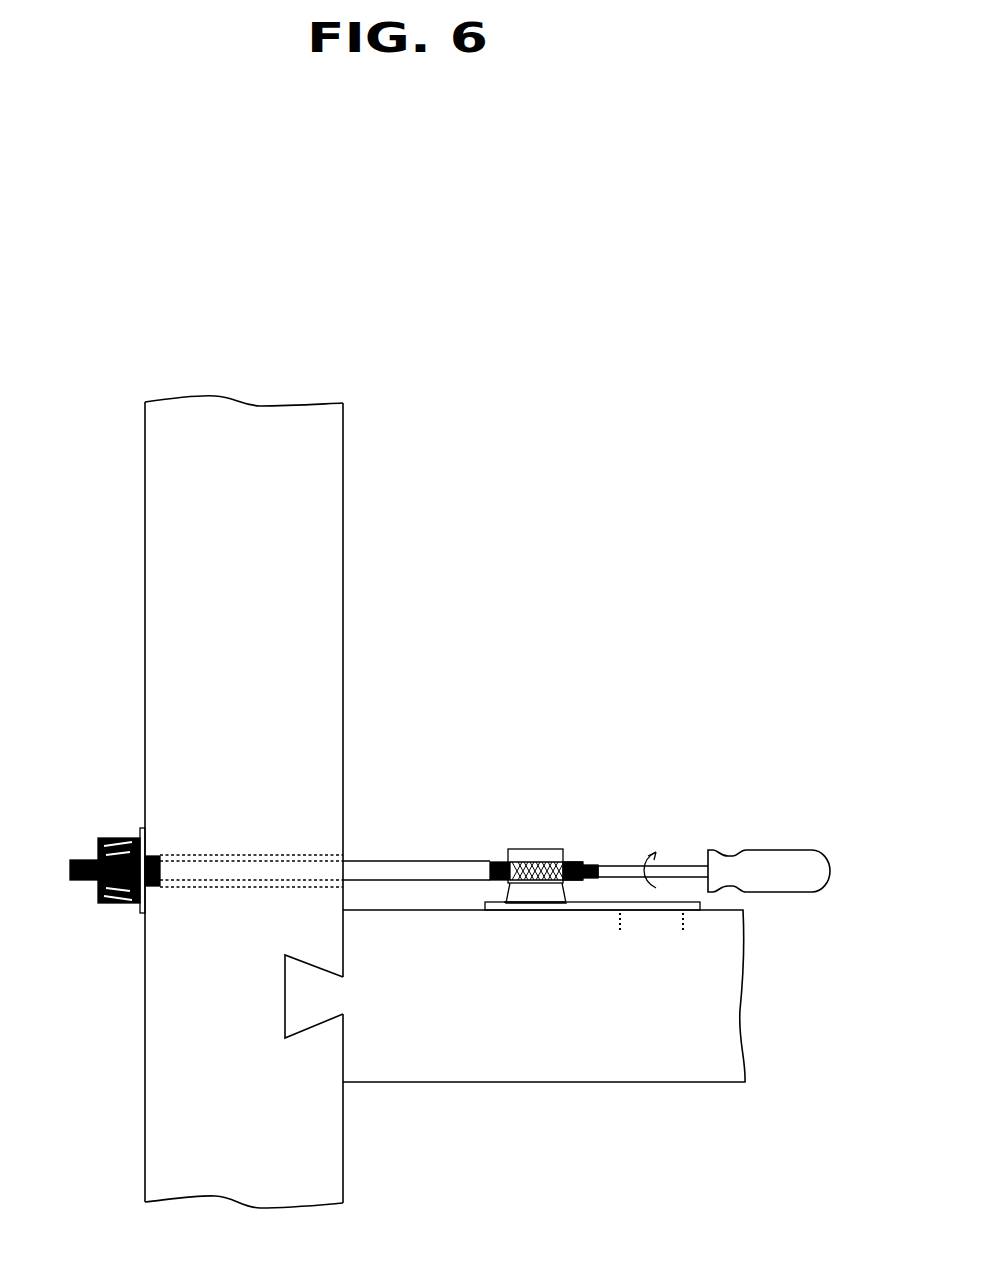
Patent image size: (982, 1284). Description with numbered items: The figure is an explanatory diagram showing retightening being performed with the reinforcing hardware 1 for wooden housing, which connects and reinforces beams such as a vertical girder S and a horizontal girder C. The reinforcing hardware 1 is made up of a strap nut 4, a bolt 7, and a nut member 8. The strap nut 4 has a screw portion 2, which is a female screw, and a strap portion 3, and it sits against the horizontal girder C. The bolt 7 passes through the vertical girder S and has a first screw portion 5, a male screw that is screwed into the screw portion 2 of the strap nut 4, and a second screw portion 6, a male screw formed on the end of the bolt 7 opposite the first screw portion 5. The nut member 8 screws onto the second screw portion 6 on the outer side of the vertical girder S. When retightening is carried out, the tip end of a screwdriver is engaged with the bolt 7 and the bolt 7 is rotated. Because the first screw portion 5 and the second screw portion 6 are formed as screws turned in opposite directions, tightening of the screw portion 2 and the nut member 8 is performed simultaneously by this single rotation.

The reinforcing hardware 1 is at (500, 755).
The screw portion 2 is at (540, 850).
The strap portion 3 is at (580, 912).
The strap nut 4 is at (510, 910).
The first screw portion 5 is at (573, 860).
The second screw portion 6 is at (82, 862).
The bolt 7 is at (378, 858).
The nut member 8 is at (118, 838).
The vertical girder S is at (307, 570).
The horizontal girder C is at (590, 1038).